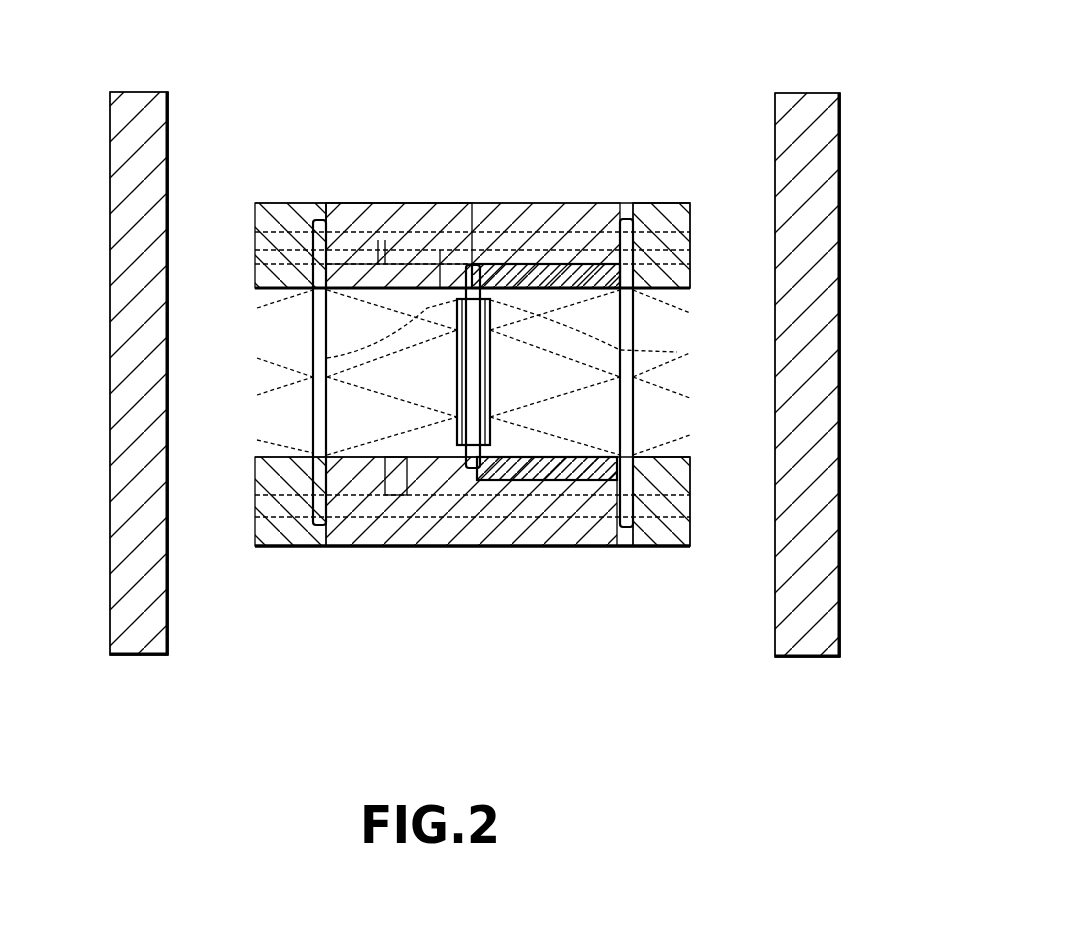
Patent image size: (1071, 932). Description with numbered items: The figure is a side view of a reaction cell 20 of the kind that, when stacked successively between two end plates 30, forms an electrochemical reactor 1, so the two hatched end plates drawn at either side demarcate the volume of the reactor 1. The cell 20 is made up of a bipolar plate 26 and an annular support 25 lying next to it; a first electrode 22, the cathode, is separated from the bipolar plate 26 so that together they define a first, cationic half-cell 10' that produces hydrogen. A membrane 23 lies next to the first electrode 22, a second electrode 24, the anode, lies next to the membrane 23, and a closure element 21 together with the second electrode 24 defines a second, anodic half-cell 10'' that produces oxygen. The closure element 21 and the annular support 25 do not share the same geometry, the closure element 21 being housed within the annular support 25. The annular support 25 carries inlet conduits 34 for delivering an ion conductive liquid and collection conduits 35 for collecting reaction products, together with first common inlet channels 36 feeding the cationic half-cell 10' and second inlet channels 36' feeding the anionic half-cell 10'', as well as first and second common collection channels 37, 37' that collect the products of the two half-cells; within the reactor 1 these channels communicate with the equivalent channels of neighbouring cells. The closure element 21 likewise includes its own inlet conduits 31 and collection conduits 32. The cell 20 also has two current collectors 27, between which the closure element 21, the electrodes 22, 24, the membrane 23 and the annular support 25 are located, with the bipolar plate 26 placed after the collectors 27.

The electrochemical reactor 1 is at (404, 660).
The first half-cell 10' is at (326, 372).
The second half-cell 10'' is at (627, 372).
The cell 20 is at (503, 198).
The closure element 21 is at (566, 167).
The first electrode 22 is at (482, 515).
The membrane 23 is at (508, 515).
The second electrode 24 is at (528, 588).
The annular support 25 is at (466, 179).
The bipolar plate 26 is at (484, 401).
The current collectors 27 is at (461, 498).
The end plates 30 is at (130, 97).
The inlet conduits 31 is at (566, 594).
The collection conduits 32 is at (546, 179).
The inlet conduits 34 is at (378, 594).
The collection conduits 35 is at (380, 262).
The first common inlet channels 36 is at (472, 594).
The second inlet channels 36' is at (691, 594).
The first common collection channels 37 is at (399, 167).
The second common collection channels 37' is at (678, 179).